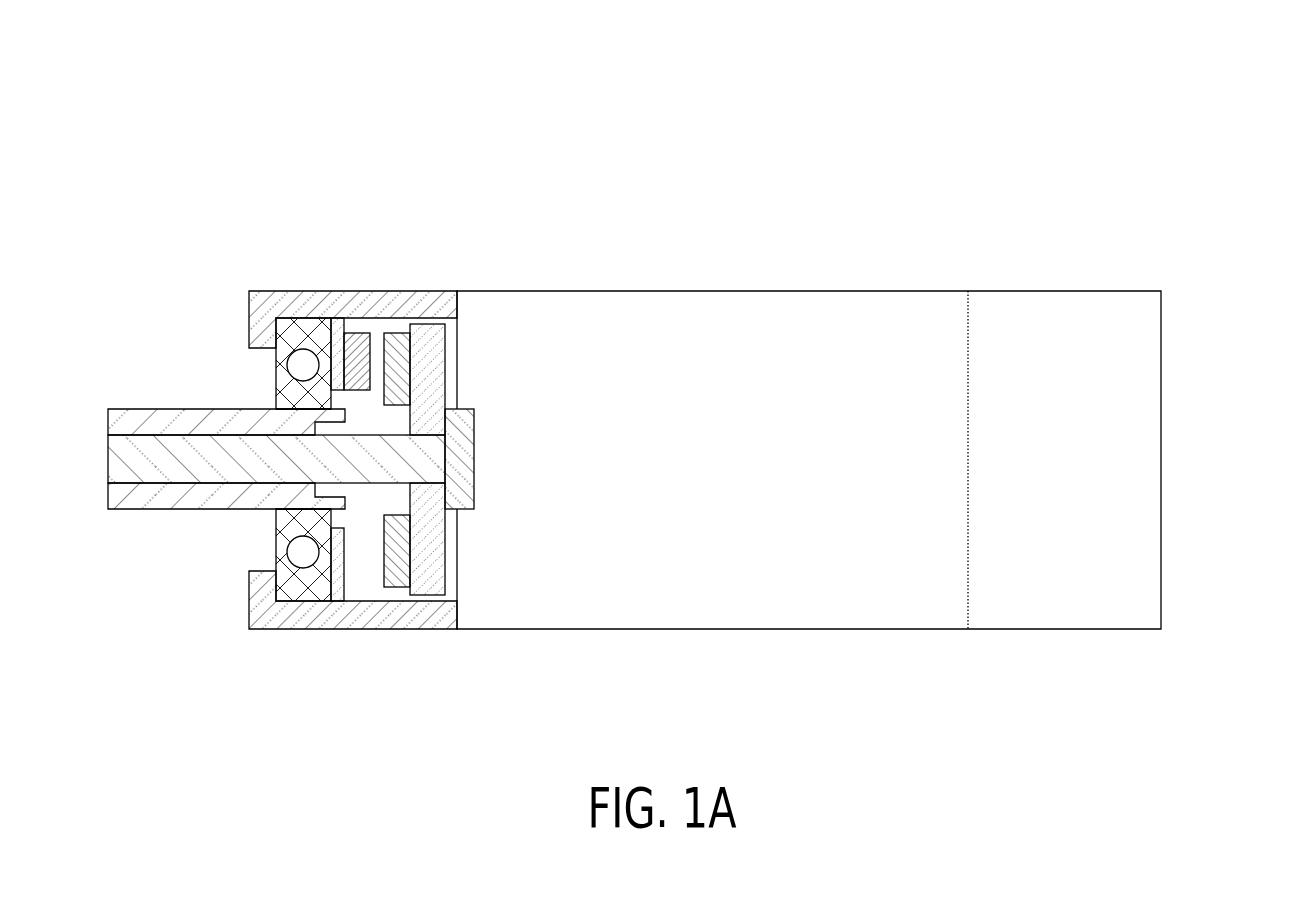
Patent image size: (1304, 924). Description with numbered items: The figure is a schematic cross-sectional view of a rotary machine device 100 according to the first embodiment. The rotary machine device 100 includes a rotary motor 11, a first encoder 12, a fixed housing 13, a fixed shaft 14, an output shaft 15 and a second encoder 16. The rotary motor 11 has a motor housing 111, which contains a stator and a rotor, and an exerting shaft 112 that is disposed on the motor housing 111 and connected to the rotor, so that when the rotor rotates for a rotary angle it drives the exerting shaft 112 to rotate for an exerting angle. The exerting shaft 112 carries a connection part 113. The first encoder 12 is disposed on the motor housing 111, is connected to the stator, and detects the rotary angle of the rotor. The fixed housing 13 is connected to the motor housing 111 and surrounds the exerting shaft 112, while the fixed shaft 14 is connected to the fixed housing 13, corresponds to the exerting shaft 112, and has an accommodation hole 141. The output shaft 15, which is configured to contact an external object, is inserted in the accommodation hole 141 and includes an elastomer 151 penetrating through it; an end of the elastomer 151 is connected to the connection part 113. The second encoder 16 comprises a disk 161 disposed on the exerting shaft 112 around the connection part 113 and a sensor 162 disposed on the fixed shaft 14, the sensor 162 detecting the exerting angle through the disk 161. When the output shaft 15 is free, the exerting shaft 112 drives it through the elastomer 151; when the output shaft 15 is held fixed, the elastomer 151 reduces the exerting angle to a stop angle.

The rotary machine device 100 is at (1280, 118).
The rotary motor 11 is at (515, 199).
The motor housing 111 is at (581, 322).
The exerting shaft 112 is at (432, 357).
The connection part 113 is at (427, 487).
The first encoder 12 is at (1038, 303).
The fixed housing 13 is at (300, 303).
The fixed shaft 14 is at (283, 325).
The accommodation hole 141 is at (275, 407).
The output shaft 15 is at (137, 420).
The elastomer 151 is at (184, 460).
The second encoder 16 is at (433, 199).
The disk 161 is at (400, 358).
The sensor 162 is at (356, 340).